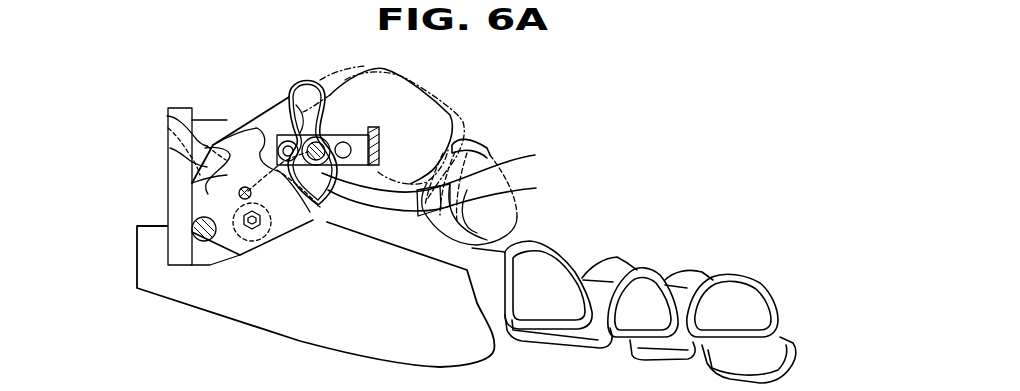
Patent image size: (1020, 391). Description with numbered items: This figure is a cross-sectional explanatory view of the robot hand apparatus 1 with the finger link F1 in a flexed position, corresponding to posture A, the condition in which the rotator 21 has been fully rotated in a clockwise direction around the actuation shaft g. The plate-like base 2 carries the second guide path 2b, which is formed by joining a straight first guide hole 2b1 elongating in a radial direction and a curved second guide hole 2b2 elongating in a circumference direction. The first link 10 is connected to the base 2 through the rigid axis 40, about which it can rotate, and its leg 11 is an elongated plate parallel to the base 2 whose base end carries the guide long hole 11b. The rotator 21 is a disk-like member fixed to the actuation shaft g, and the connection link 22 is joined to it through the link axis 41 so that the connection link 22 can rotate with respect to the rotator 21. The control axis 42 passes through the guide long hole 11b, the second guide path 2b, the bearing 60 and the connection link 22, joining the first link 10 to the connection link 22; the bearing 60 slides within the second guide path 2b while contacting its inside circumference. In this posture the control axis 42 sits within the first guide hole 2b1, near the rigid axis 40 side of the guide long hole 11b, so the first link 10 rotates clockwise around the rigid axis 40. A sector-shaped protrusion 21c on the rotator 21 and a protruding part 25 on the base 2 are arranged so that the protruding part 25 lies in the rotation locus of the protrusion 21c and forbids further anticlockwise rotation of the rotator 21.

The robot hand apparatus 1 is at (548, 133).
The base 2 is at (263, 105).
The second guide path 2b is at (303, 99).
The first guide hole 2b1 is at (318, 206).
The second guide hole 2b2 is at (290, 128).
The first link 10 is at (384, 142).
The leg 11 is at (363, 142).
The guide long hole 11b is at (356, 136).
The rotator 21 is at (170, 148).
The protrusion 21c is at (167, 116).
The connection link 22 is at (253, 243).
The protruding part 25 is at (193, 228).
The rigid axis 40 is at (262, 114).
The link axis 41 is at (249, 255).
The control axis 42 is at (533, 155).
The bearing 60 is at (533, 188).
The actuation shaft g is at (239, 193).
The finger link F1 is at (468, 123).
The posture A is at (524, 216).